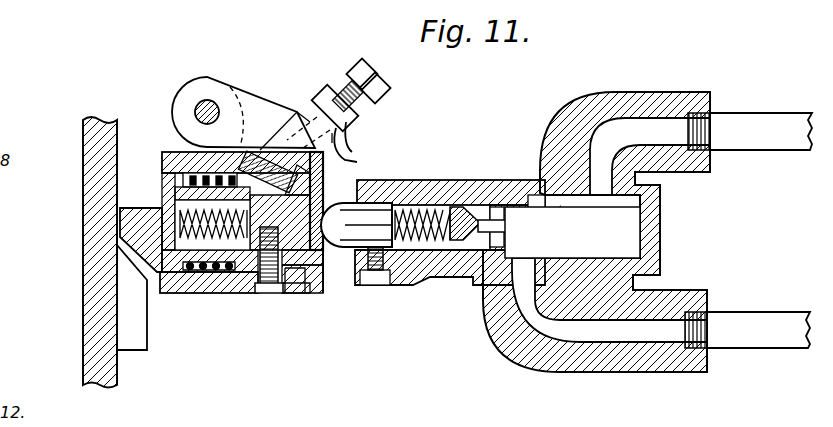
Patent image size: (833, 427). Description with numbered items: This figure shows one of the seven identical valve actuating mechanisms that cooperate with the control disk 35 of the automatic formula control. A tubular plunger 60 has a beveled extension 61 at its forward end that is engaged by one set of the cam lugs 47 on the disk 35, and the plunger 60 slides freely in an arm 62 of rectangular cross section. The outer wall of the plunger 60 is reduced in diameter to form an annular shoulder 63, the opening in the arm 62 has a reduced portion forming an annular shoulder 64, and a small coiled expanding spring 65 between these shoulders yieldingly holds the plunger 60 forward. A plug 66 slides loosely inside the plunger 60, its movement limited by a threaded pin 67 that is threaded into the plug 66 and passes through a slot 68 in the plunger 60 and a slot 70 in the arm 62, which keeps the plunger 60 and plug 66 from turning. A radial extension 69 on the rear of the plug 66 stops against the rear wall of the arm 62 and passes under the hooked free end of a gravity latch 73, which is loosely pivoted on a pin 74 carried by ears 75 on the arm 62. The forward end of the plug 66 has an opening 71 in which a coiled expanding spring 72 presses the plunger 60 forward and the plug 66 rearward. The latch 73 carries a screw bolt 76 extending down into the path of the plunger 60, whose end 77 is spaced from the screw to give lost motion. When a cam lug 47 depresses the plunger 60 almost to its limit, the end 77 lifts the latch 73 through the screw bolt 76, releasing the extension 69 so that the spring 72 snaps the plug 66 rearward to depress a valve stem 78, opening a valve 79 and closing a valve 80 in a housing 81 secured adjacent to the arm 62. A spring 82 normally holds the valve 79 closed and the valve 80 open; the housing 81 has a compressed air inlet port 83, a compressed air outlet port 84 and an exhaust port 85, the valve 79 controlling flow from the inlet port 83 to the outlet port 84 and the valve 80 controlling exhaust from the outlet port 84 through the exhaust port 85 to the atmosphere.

The disk 35 is at (87, 297).
The cam lug 47 is at (147, 345).
The tubular plunger 60 is at (164, 185).
The beveled extension 61 is at (122, 208).
The arm 62 is at (220, 293).
The annular shoulder 63 is at (163, 160).
The annular shoulder 64 is at (255, 152).
The coiled expanding spring 65 is at (258, 160).
The plug 66 is at (325, 248).
The threaded pin 67 is at (290, 294).
The slot 68 is at (262, 295).
The radial extension 69 is at (357, 162).
The slot 70 is at (328, 294).
The opening 71 is at (188, 294).
The coiled expanding spring 72 is at (165, 203).
The gravity latch 73 is at (307, 115).
The pin 74 is at (207, 100).
The ears 75 is at (178, 145).
The screw bolt 76 is at (356, 68).
The end 77 is at (297, 118).
The valve stem 78 is at (415, 180).
The valve 79 is at (545, 215).
The valve 80 is at (475, 212).
The housing 81 is at (498, 302).
The spring 82 is at (568, 207).
The compressed air inlet port 83 is at (635, 118).
The compressed air outlet port 84 is at (643, 335).
The exhaust port 85 is at (457, 280).